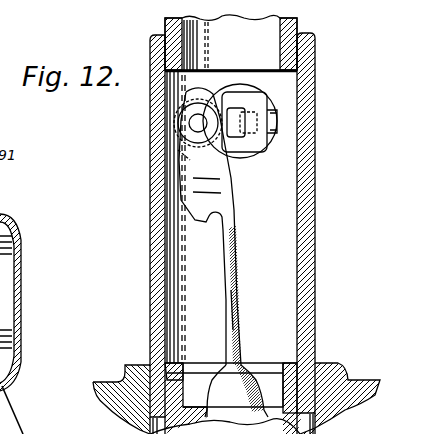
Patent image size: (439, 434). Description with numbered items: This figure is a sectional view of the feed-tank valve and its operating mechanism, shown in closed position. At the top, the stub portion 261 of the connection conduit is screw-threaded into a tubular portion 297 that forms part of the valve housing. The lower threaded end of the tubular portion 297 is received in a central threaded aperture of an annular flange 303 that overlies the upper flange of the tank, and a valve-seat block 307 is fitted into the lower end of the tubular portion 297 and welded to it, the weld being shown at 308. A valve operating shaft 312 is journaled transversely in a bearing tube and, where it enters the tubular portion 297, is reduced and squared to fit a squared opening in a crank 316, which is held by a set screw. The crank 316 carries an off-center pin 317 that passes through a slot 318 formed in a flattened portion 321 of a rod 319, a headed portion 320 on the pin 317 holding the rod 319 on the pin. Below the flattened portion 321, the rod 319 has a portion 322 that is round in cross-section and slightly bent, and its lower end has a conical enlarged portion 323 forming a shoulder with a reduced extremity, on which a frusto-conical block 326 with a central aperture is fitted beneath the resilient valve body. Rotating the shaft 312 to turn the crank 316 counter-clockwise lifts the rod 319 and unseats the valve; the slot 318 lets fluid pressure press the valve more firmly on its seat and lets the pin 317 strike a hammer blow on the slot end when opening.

The stub portion 261 is at (300, 22).
The tubular portion 297 is at (310, 238).
The annular flange 303 is at (351, 378).
The valve-seat block 307 is at (293, 386).
The weld 308 is at (312, 332).
The valve operating shaft 312 is at (234, 108).
The crank 316 is at (258, 97).
The off-center pin 317 is at (196, 124).
The slot 318 is at (170, 158).
The rod 319 is at (240, 254).
The headed portion 320 is at (180, 117).
The flattened portion 321 is at (222, 184).
The round portion 322 is at (237, 307).
The conical enlarged portion 323 is at (240, 387).
The frusto-conical block 326 is at (203, 420).